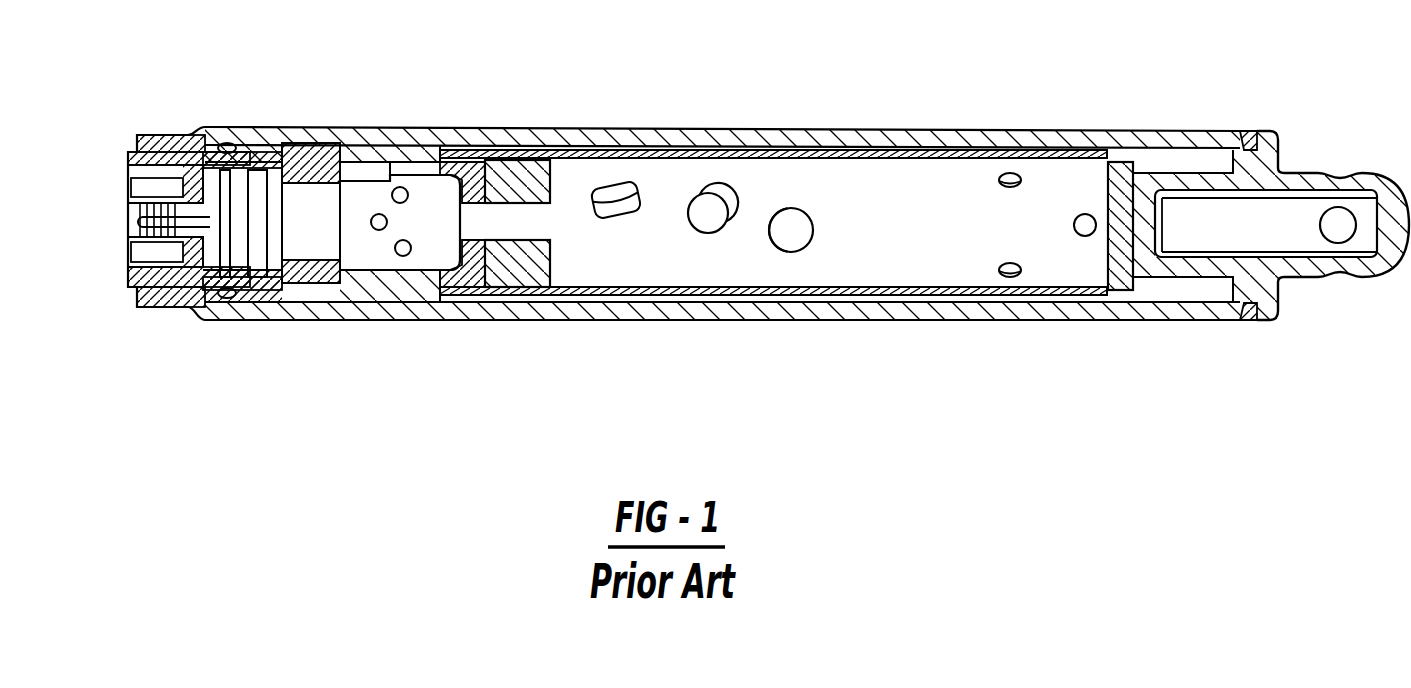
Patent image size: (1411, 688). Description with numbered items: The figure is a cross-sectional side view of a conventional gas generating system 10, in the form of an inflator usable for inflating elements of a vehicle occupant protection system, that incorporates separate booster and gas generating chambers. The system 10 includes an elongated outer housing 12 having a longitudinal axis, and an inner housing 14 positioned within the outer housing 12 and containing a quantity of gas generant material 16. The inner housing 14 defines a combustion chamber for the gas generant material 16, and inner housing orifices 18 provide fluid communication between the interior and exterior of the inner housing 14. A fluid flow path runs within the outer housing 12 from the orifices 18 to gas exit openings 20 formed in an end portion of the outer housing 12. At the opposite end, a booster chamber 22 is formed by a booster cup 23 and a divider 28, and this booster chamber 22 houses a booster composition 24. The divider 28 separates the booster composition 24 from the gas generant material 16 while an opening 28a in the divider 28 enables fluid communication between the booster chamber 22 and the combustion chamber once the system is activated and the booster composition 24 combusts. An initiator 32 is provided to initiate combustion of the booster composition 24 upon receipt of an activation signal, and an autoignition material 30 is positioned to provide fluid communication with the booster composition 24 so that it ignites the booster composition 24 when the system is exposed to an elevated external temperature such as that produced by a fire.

The gas generating system 10 is at (939, 412).
The outer housing 12 is at (827, 135).
The inner housing 14 is at (575, 150).
The gas generant material 16 is at (700, 233).
The inner housing orifices 18 is at (1020, 182).
The gas exit openings 20 is at (1337, 187).
The booster chamber 22 is at (400, 226).
The booster cup 23 is at (320, 285).
The booster composition 24 is at (402, 257).
The divider 28 is at (540, 222).
The opening 28a is at (542, 227).
The autoignition material 30 is at (320, 173).
The initiator 32 is at (240, 198).